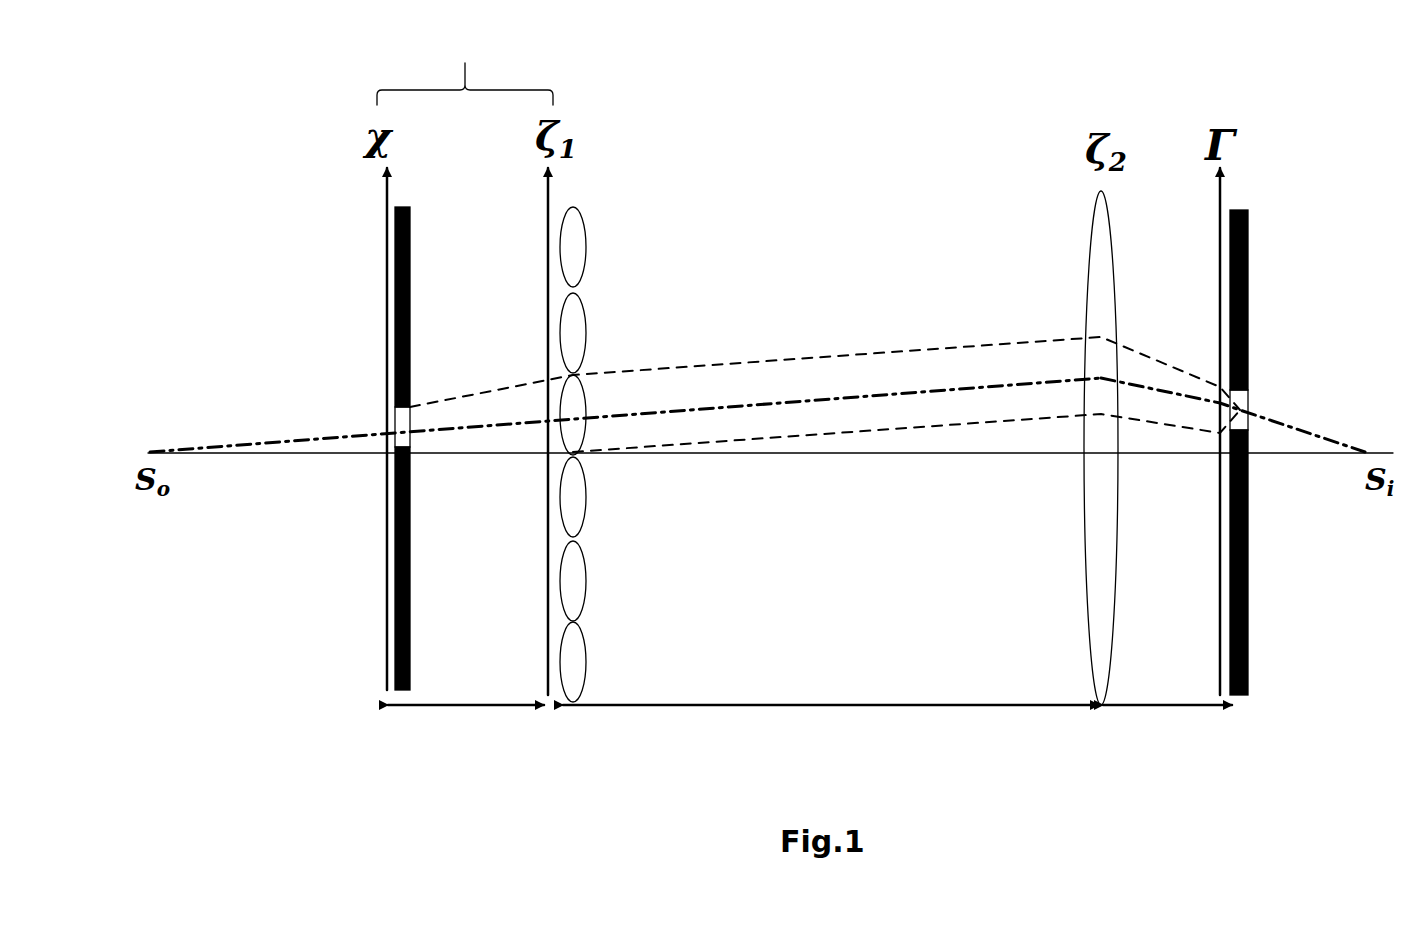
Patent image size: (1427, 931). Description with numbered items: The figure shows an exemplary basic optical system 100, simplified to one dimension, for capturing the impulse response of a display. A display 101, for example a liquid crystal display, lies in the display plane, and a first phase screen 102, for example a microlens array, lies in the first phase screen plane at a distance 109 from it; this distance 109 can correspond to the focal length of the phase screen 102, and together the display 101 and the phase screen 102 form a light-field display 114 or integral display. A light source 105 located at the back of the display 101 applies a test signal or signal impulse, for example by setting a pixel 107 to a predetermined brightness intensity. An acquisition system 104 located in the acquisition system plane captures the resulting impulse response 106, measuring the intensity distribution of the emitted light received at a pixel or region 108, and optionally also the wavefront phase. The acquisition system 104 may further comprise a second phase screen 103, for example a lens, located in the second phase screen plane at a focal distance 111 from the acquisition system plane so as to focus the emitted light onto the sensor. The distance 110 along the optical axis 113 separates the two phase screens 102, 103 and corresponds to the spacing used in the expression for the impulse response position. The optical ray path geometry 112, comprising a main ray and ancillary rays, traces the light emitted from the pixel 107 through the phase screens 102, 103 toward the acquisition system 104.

The optical system 100 is at (305, 745).
The display 101 is at (416, 232).
The first phase screen 102 is at (588, 232).
The second phase screen 103 is at (1086, 222).
The acquisition system 104 is at (1250, 222).
The light source 105 is at (150, 450).
The impulse response 106 is at (1367, 450).
The pixel 107 is at (385, 416).
The region of acquisition system 108 is at (1248, 408).
The distance between display and first phase screen 109 is at (470, 713).
The distance between phase screens 110 is at (827, 713).
The distance between second phase screen and acquisition system 111 is at (1167, 713).
The optical ray path geometry 112 is at (785, 362).
The optical axis 113 is at (822, 460).
The light-field display 114 is at (465, 69).